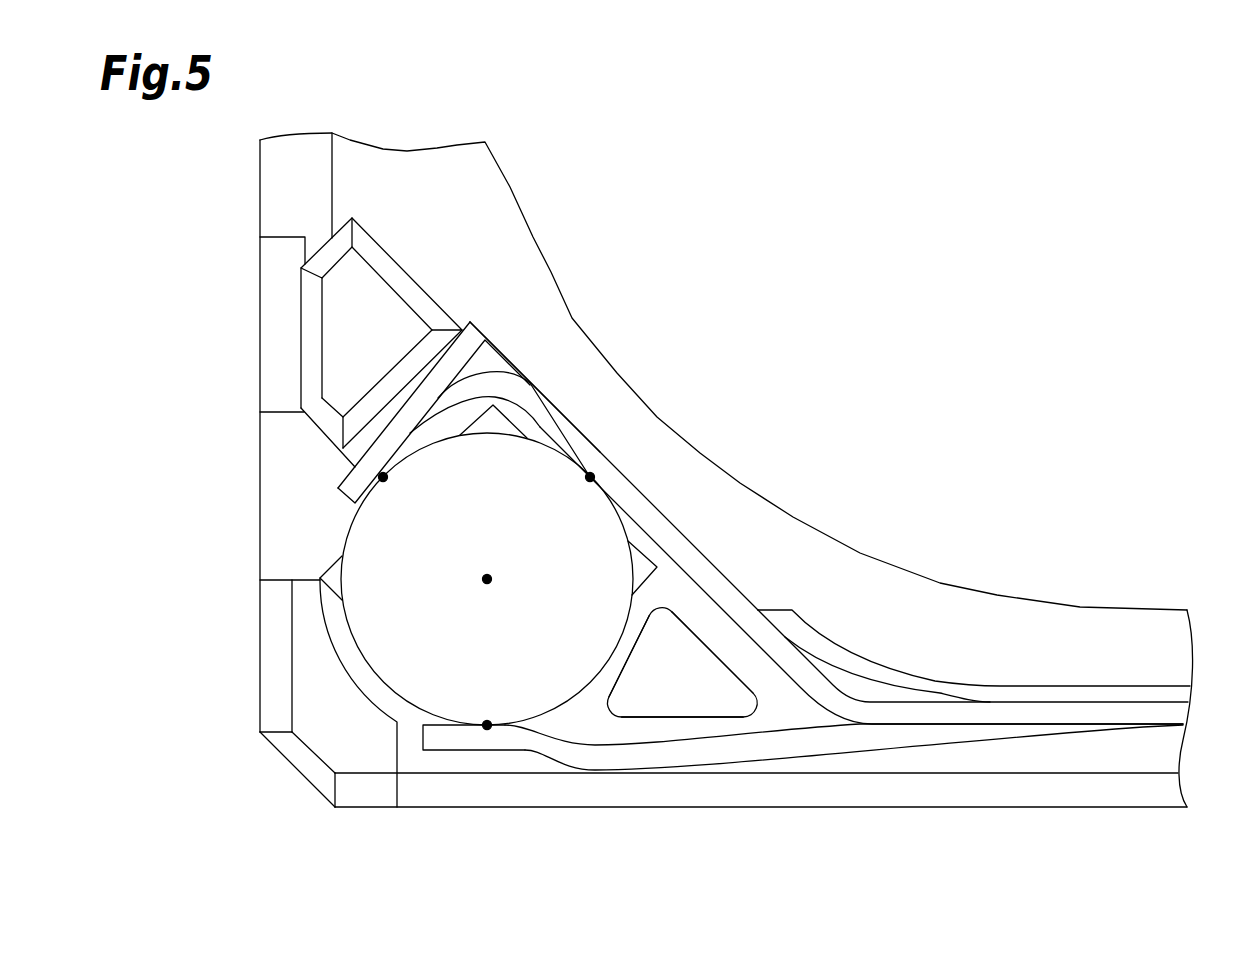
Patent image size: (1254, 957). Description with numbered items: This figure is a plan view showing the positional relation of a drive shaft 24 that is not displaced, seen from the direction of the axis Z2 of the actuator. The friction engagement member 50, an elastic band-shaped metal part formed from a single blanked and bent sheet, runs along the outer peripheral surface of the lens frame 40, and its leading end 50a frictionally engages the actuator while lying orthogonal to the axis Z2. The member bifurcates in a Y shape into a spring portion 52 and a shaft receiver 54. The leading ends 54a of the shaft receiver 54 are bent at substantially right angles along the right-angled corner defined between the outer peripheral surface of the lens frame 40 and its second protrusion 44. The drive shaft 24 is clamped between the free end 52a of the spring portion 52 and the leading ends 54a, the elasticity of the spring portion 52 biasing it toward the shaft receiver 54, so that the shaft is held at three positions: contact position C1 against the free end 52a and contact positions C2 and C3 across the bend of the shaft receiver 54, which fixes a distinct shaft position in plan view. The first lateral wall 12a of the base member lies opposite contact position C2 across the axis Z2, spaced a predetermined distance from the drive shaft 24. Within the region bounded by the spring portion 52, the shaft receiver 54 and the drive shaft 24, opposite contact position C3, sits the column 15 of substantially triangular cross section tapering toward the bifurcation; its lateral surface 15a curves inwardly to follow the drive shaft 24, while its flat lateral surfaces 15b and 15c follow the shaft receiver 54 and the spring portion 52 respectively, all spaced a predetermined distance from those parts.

The lens frame 40 is at (1087, 607).
The first lateral wall 12a is at (313, 698).
The second protrusion 44 is at (345, 333).
The drive shaft 24 is at (347, 513).
The shaft receiver 54 is at (740, 605).
The leading ends of the shaft receiver 54a is at (528, 378).
The leading end of the friction engagement member 50a is at (687, 553).
The friction engagement member 50 is at (1172, 713).
The spring portion 52 is at (782, 743).
The free end of the spring portion 52a is at (463, 740).
The column 15 is at (658, 695).
The lateral surface 15a is at (617, 683).
The lateral surface 15b is at (737, 660).
The lateral surface 15c is at (713, 717).
The contact position C1 is at (487, 710).
The contact position C2 is at (574, 494).
The contact position C3 is at (403, 492).
The axis of the actuator Z2 is at (486, 601).